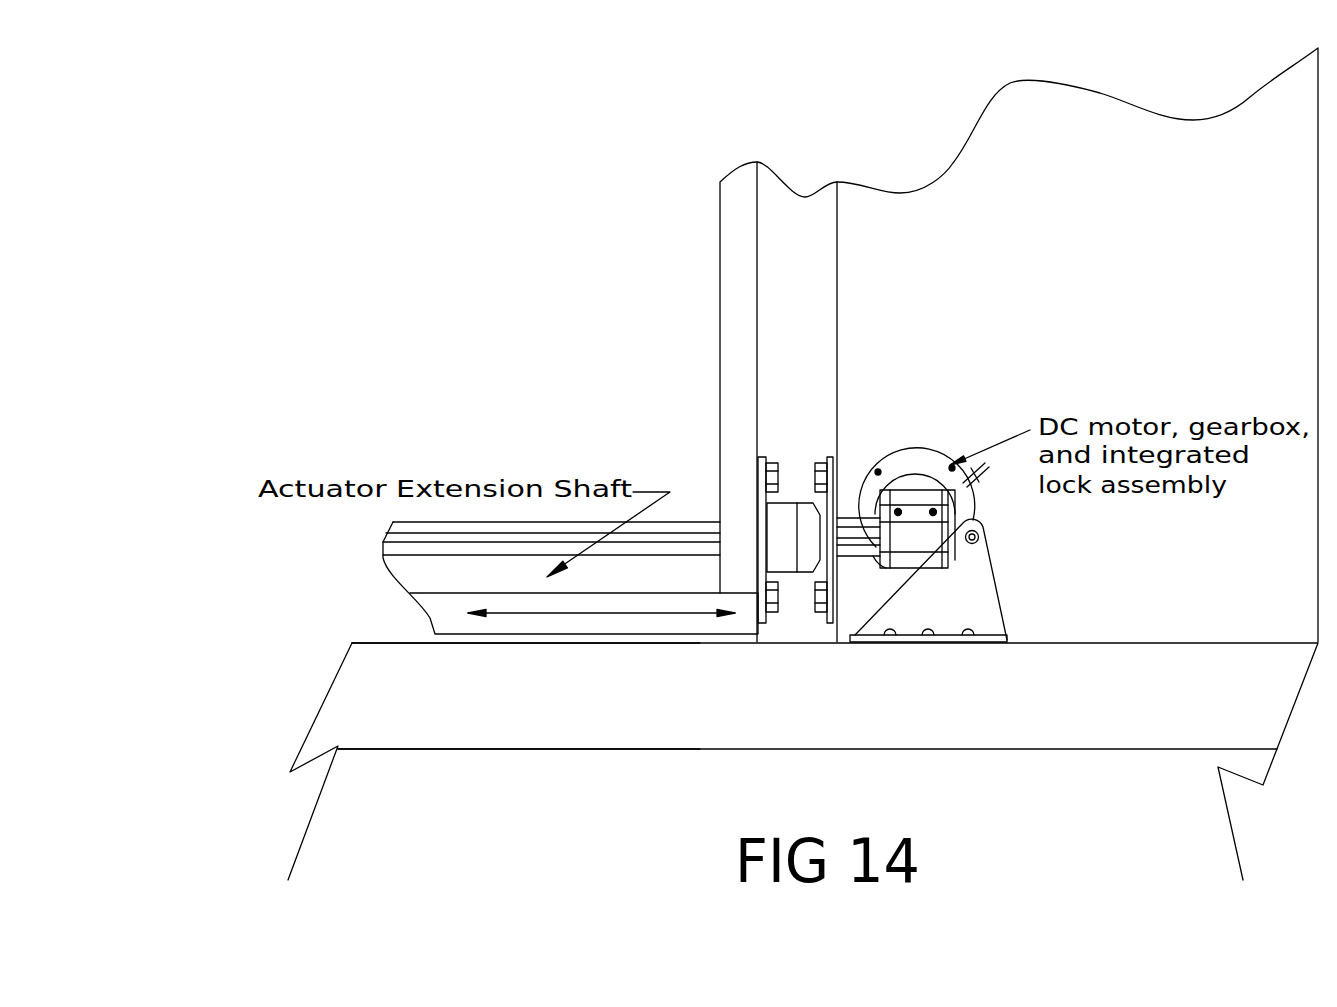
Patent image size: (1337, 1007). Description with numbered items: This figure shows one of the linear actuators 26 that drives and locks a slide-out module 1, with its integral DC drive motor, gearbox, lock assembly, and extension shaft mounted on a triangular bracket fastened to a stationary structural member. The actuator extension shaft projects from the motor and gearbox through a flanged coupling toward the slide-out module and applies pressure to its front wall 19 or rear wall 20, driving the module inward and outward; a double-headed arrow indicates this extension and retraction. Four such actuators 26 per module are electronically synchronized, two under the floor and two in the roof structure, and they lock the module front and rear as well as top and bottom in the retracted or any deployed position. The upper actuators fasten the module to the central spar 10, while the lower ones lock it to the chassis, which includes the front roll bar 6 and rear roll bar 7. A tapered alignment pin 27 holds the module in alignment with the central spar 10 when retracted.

The slide-out module 1 is at (745, 308).
The front roll bar 6 is at (519, 771).
The rear roll bar 7 is at (470, 713).
The central spar 10 is at (1147, 572).
The front wall 19 is at (493, 500).
The rear wall 20 is at (450, 620).
The linear actuator 26 is at (937, 488).
The tapered alignment pin 27 is at (783, 537).